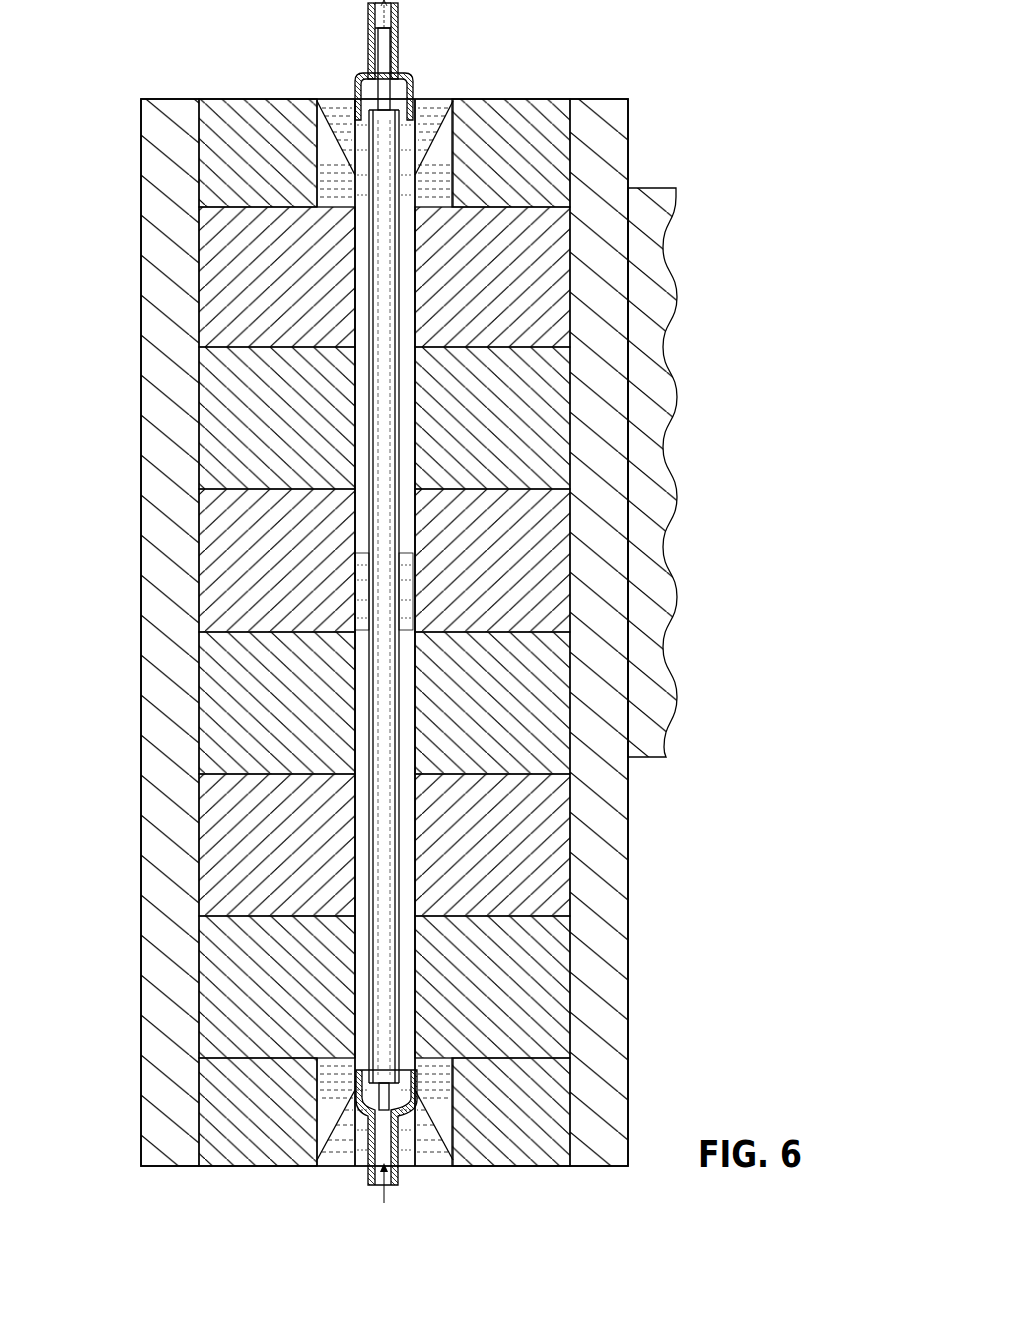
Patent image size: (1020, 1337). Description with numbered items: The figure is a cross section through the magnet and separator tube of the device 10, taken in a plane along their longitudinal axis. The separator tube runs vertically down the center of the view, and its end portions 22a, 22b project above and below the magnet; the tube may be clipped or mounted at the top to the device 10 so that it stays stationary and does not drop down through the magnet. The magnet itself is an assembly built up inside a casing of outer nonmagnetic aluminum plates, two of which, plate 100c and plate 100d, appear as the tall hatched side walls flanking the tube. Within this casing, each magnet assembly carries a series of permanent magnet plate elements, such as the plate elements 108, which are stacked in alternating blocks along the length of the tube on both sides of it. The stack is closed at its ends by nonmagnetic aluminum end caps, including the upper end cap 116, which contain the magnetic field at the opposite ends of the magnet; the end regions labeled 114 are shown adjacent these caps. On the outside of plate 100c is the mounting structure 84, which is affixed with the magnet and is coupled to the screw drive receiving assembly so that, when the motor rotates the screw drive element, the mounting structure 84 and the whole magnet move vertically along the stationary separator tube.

The device 10 is at (636, 94).
The inlet fitting 22a is at (407, 1110).
The outlet fitting 22b is at (404, 78).
The mounting structure 84 is at (662, 262).
The outer nonmagnetic plate 100c is at (617, 832).
The outer nonmagnetic plate 100d is at (141, 575).
The permanent magnet plate element 108 is at (230, 277).
The end block 114 is at (257, 100).
The upper end cap 116 is at (527, 1160).